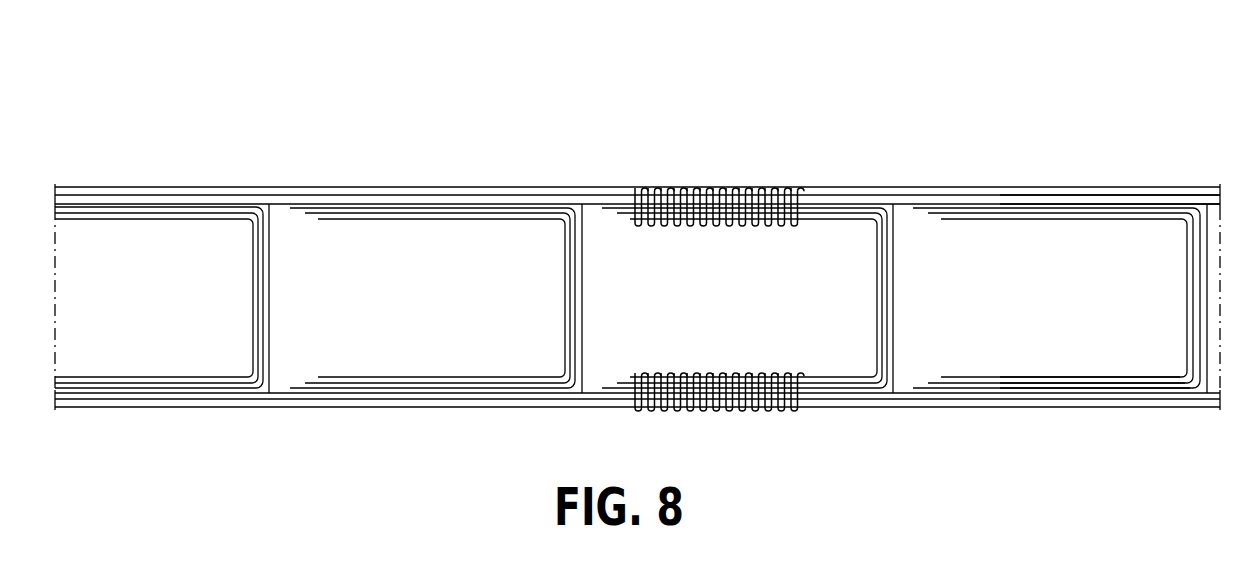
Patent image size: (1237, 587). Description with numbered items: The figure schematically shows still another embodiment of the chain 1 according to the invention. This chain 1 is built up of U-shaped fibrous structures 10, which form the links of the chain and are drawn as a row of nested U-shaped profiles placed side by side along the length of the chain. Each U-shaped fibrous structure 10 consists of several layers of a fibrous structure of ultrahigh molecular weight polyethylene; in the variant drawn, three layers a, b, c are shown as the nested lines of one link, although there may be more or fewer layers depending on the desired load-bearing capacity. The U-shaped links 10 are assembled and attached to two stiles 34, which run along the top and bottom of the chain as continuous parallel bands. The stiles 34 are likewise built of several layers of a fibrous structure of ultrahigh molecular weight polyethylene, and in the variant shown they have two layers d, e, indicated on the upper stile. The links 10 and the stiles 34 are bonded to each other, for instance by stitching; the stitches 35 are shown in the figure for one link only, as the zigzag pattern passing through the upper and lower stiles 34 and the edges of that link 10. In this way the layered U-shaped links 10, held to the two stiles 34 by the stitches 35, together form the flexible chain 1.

The chain 1 is at (61, 94).
The U-shaped fibrous structure 10 is at (125, 377).
The stile 34 is at (280, 204).
The stitches 35 is at (703, 373).
The layer a is at (1077, 377).
The layer b is at (1103, 383).
The layer c is at (1127, 388).
The layer d is at (1077, 195).
The layer e is at (1103, 204).